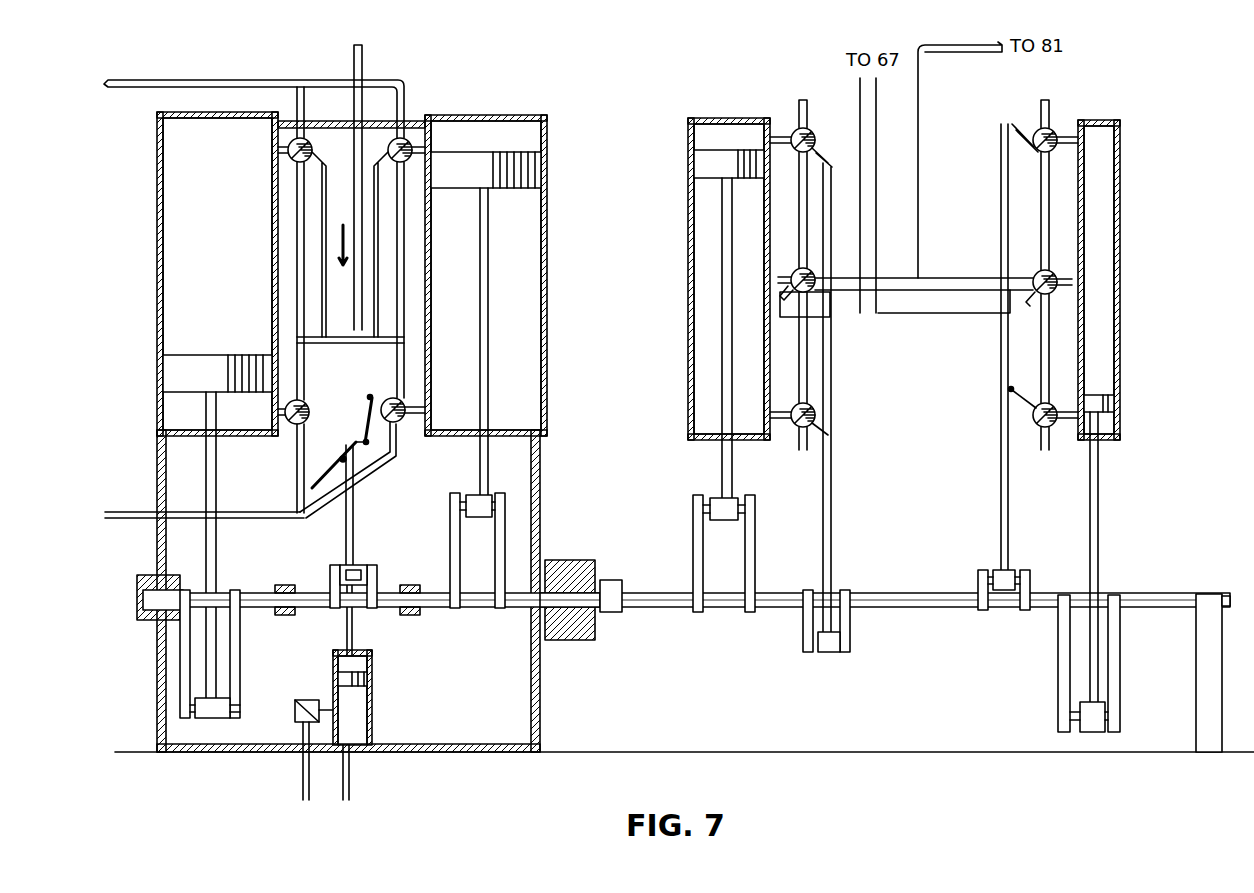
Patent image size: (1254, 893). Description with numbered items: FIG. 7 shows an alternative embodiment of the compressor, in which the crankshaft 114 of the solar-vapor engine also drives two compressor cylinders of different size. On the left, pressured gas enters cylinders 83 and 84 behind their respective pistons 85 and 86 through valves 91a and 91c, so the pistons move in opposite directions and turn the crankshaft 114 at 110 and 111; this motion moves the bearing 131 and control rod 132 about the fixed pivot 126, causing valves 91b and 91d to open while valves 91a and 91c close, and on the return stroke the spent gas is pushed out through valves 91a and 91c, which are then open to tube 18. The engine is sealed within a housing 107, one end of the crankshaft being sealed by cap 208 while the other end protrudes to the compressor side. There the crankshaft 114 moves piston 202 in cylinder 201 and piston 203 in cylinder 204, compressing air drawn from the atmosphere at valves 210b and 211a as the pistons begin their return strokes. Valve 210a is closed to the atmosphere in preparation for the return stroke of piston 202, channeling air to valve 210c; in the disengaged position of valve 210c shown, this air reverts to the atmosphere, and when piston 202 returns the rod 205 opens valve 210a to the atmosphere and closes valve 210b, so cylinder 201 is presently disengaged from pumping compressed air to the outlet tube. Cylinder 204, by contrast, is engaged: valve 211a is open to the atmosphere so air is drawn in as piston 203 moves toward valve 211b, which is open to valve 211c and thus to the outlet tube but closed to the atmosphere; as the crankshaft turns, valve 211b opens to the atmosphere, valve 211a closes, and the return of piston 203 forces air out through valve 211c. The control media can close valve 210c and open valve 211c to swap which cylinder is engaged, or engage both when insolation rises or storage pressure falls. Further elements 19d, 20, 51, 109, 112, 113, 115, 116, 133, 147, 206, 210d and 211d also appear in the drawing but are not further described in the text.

The tube 18 is at (180, 80).
The rod 19d is at (303, 775).
The rod 20 is at (350, 778).
The pipe 51 is at (362, 64).
The cylinder 83 is at (162, 133).
The cylinder 84 is at (510, 120).
The piston 85 is at (198, 365).
The piston 86 is at (480, 165).
The valve 91a is at (408, 163).
The valve 91b is at (410, 402).
The valve 91c is at (293, 426).
The valve 91d is at (290, 162).
The housing 107 is at (392, 118).
The bearing 109 is at (548, 565).
The crankshaft connection 110 is at (232, 704).
The crankshaft connection 111 is at (452, 505).
The bearing 112 is at (282, 616).
The bearing 113 is at (412, 616).
The crankshaft 114 is at (255, 585).
The cylinder 115 is at (372, 698).
The coupling 116 is at (610, 580).
The fixed pivot 126 is at (340, 456).
The bearing 131 is at (365, 567).
The control rod 132 is at (378, 446).
The rod 133 is at (354, 530).
The bearing support 147 is at (575, 645).
The cylinder 201 is at (720, 124).
The piston 202 is at (700, 163).
The piston 203 is at (1100, 392).
The cylinder 204 is at (1108, 152).
The rod 205 is at (831, 528).
The rod 206 is at (1000, 530).
The cap 208 is at (137, 595).
The valve 210a is at (815, 415).
The valve 210b is at (812, 128).
The valve 210c is at (815, 290).
The valve lever 210d is at (830, 335).
The valve 211a is at (1033, 425).
The valve 211b is at (1057, 128).
The valve 211c is at (1033, 275).
The valve lever 211d is at (1040, 300).